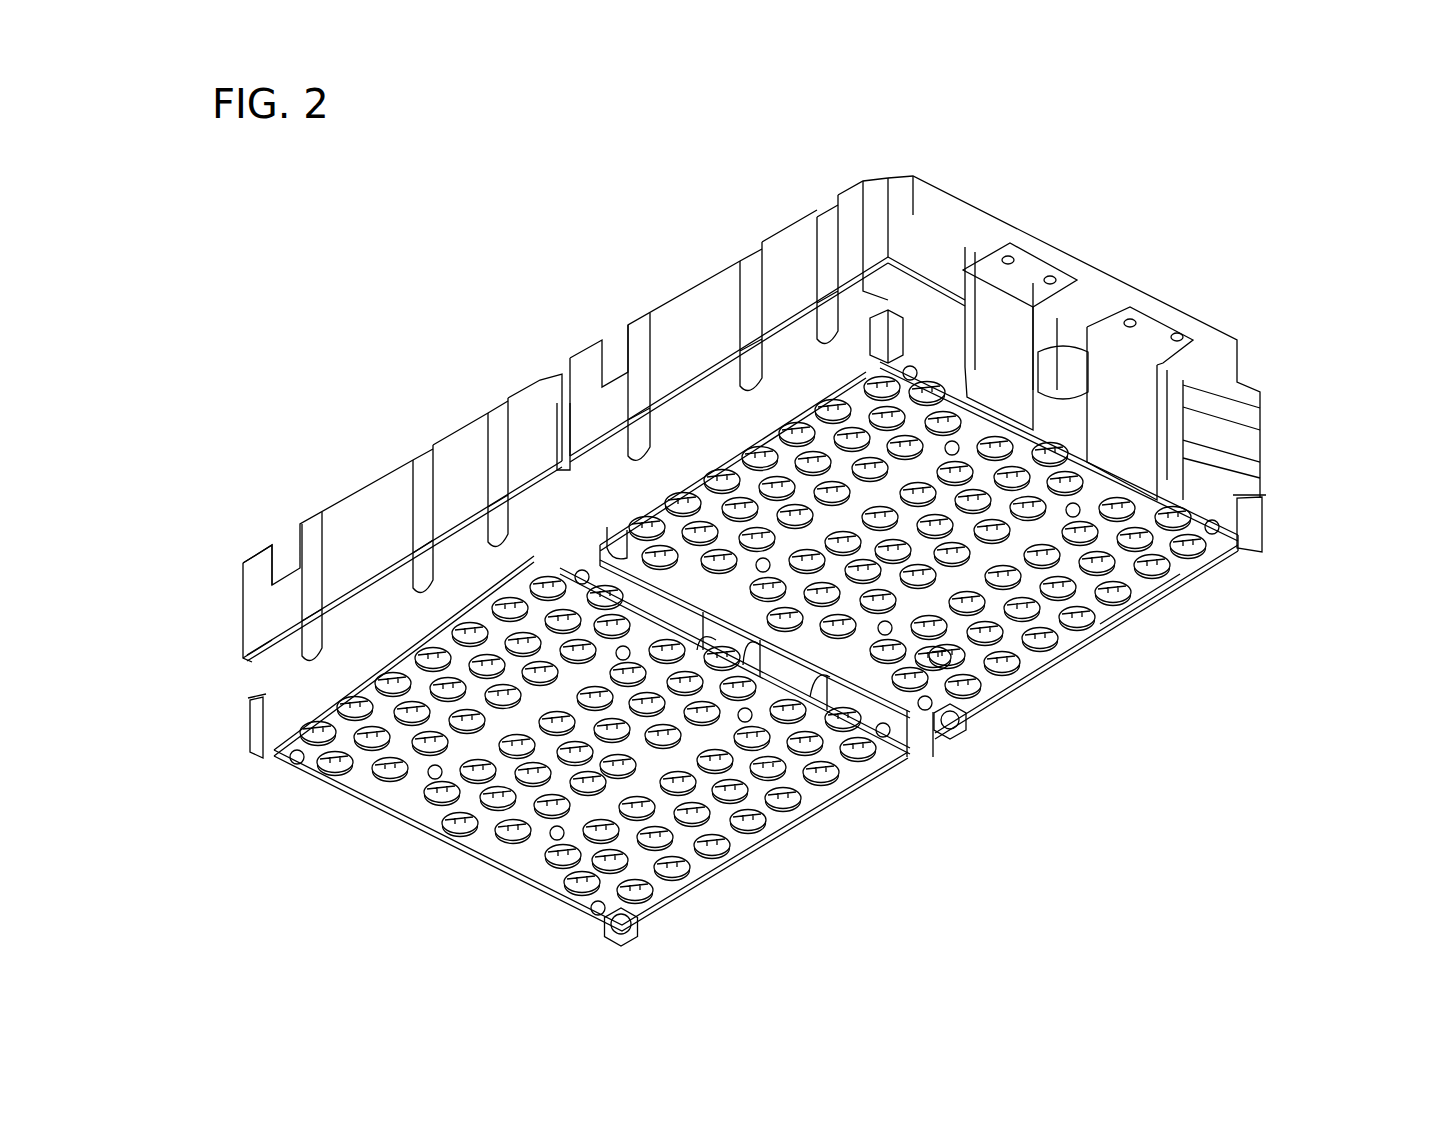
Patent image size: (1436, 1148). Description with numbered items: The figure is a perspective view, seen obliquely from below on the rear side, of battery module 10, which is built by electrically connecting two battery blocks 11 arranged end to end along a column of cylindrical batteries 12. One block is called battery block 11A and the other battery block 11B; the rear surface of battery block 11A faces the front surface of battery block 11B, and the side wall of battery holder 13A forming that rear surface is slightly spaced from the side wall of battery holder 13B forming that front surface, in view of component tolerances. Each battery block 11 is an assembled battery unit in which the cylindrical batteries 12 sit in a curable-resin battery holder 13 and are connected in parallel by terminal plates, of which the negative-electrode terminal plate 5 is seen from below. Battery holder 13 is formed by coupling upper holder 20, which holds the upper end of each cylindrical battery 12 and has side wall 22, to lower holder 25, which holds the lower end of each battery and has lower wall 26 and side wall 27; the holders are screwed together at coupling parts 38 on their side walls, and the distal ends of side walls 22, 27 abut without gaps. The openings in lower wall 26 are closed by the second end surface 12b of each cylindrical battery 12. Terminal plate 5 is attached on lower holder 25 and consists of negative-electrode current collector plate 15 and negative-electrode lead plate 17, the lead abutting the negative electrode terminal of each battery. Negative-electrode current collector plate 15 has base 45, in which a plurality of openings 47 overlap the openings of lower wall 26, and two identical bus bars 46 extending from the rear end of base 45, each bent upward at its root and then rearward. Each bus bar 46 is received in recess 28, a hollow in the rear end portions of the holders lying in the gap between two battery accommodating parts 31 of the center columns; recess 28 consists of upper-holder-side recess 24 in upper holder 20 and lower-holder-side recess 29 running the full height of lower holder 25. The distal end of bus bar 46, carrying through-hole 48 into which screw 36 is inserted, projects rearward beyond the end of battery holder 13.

The battery module 10 is at (1258, 180).
The battery block 11 is at (690, 290).
The first battery block 11A is at (371, 518).
The second battery block 11B is at (729, 320).
The battery holder 13 is at (769, 359).
The battery holder of first battery block 13A is at (467, 440).
The battery holder of second battery block 13B is at (955, 100).
The cylindrical battery 12 is at (502, 835).
The second end surface 12b is at (603, 736).
The terminal plate 5 is at (1060, 760).
The negative-electrode current collector plate 15 is at (745, 840).
The negative-electrode lead plate 17 is at (1002, 675).
The upper holder 20 is at (935, 205).
The side wall 22 is at (258, 616).
The upper-holder-side recess 24 is at (1265, 405).
The lower holder 25 is at (866, 297).
The lower wall 26 is at (390, 772).
The side wall 27 is at (250, 712).
The recess 28 is at (1043, 323).
The lower-holder-side recess 29 is at (1265, 478).
The battery accommodating part 31 is at (316, 745).
The screw 36 is at (433, 780).
The coupling part 38 is at (305, 590).
The base 45 is at (1143, 592).
The bus bar 46 is at (990, 323).
The opening 47 is at (1195, 560).
The through-hole 48 is at (1010, 262).